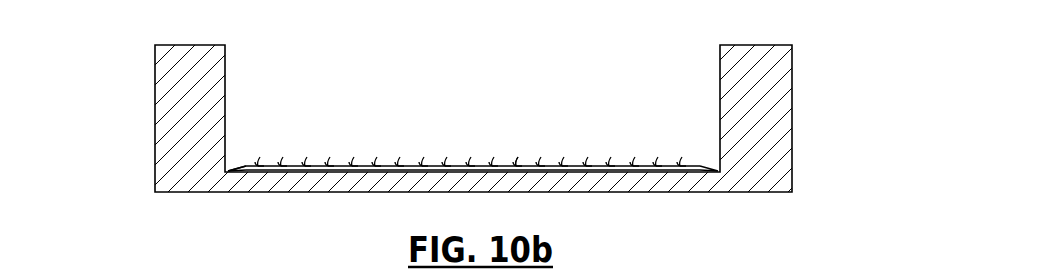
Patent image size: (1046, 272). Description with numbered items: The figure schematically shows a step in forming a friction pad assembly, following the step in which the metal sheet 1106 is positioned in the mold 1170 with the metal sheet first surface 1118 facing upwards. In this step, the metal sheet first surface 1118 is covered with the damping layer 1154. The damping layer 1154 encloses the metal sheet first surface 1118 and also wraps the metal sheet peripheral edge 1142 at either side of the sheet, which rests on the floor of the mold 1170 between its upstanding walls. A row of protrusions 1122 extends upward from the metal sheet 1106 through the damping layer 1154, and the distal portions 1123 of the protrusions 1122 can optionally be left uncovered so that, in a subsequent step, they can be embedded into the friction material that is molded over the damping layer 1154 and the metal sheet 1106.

The mold 1170 is at (124, 38).
The metal sheet 1106 is at (268, 171).
The damping layer 1154 is at (233, 170).
The metal sheet first surface 1118 is at (337, 168).
The metal sheet peripheral edge 1142 is at (258, 166).
The protrusions 1122 is at (566, 160).
The distal portions 1123 is at (522, 165).